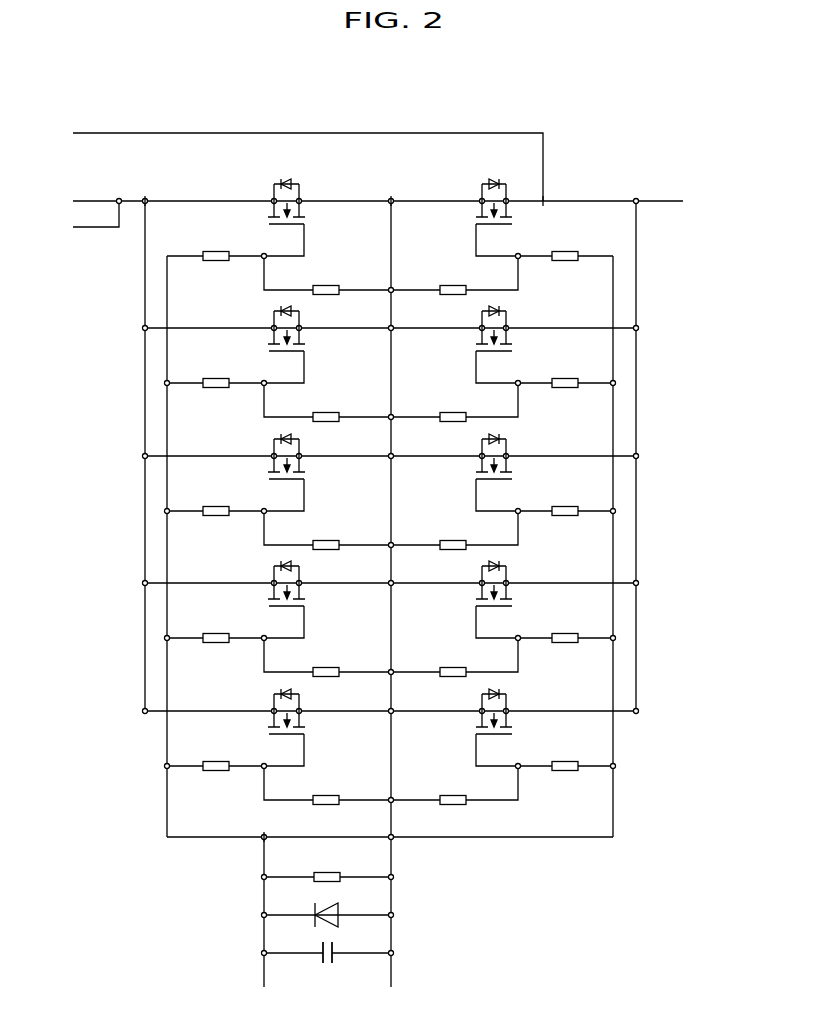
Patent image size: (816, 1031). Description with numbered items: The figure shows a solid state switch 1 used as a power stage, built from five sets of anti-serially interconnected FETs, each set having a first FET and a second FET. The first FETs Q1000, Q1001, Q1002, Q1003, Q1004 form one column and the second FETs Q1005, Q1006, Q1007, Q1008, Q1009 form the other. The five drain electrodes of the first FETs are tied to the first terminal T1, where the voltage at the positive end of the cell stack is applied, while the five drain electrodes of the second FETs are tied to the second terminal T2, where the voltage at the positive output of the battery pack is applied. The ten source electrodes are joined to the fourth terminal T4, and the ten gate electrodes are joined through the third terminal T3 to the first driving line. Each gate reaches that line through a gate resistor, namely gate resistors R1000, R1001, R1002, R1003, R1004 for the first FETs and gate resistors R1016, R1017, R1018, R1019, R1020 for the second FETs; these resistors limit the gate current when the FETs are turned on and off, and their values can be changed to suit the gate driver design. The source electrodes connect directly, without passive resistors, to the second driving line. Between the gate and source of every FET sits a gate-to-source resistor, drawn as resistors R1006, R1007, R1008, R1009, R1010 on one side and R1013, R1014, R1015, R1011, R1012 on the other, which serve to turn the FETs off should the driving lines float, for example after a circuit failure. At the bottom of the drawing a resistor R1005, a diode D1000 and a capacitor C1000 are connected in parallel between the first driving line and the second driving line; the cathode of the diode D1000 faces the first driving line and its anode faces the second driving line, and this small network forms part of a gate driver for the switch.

The solid state switch 1 is at (567, 128).
The first terminal T1 is at (144, 190).
The second terminal T2 is at (554, 191).
The third terminal T3 is at (261, 827).
The fourth terminal T4 is at (389, 191).
The first FET Q1000 is at (282, 187).
The first FET Q1001 is at (264, 327).
The first FET Q1002 is at (264, 455).
The first FET Q1003 is at (264, 582).
The first FET Q1004 is at (264, 710).
The second FET Q1005 is at (490, 187).
The second FET Q1006 is at (516, 326).
The second FET Q1007 is at (516, 454).
The second FET Q1008 is at (516, 581).
The second FET Q1009 is at (516, 709).
The gate resistor R1000 is at (215, 245).
The gate resistor R1001 is at (215, 372).
The gate resistor R1002 is at (215, 500).
The gate resistor R1003 is at (215, 627).
The gate resistor R1004 is at (215, 755).
The resistor R1005 is at (326, 864).
The gate-to-source resistor R1006 is at (325, 279).
The gate-to-source resistor R1007 is at (325, 406).
The gate-to-source resistor R1008 is at (325, 534).
The gate-to-source resistor R1009 is at (325, 661).
The gate-to-source resistor R1010 is at (325, 789).
The gate-to-source resistor R1011 is at (452, 661).
The gate-to-source resistor R1012 is at (452, 789).
The gate-to-source resistor R1013 is at (452, 279).
The gate-to-source resistor R1014 is at (452, 406).
The gate-to-source resistor R1015 is at (452, 534).
The gate resistor R1016 is at (564, 245).
The gate resistor R1017 is at (564, 372).
The gate resistor R1018 is at (564, 500).
The gate resistor R1019 is at (564, 627).
The gate resistor R1020 is at (564, 755).
The diode D1000 is at (326, 902).
The capacitor C1000 is at (326, 966).